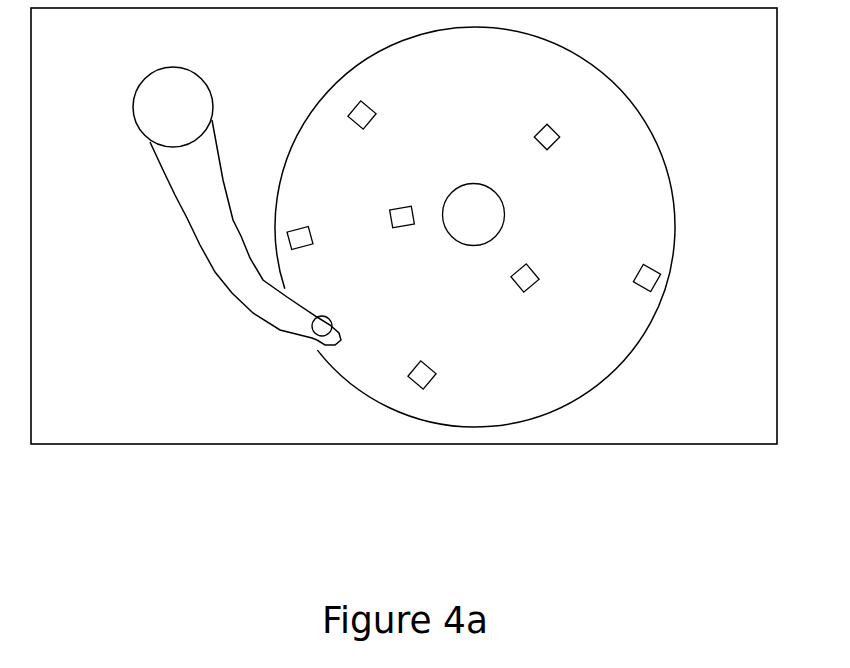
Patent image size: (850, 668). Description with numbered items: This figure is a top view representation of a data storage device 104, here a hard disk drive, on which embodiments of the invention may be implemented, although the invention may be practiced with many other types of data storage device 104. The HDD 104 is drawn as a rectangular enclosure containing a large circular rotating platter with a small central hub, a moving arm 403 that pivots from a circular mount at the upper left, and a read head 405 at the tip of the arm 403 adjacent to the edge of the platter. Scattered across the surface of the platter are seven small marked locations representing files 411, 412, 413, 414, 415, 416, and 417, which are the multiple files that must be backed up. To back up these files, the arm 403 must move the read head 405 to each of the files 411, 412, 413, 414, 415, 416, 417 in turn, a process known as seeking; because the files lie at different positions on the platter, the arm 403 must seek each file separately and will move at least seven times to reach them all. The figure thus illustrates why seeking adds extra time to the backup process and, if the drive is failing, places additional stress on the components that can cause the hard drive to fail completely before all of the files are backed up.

The data storage device 104 is at (758, 48).
The moving arm 403 is at (192, 222).
The read head 405 is at (313, 357).
The file 411 is at (380, 101).
The file 412 is at (670, 270).
The file 413 is at (442, 364).
The file 414 is at (418, 205).
The file 415 is at (310, 222).
The file 416 is at (572, 126).
The file 417 is at (548, 269).